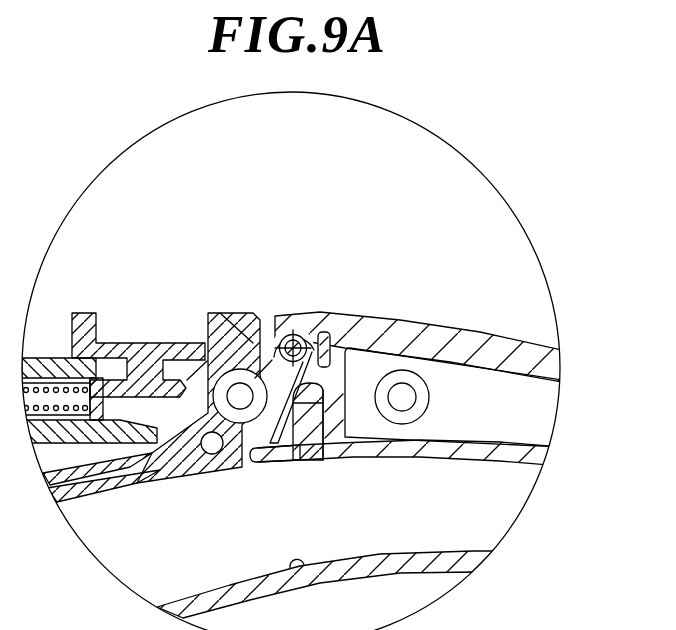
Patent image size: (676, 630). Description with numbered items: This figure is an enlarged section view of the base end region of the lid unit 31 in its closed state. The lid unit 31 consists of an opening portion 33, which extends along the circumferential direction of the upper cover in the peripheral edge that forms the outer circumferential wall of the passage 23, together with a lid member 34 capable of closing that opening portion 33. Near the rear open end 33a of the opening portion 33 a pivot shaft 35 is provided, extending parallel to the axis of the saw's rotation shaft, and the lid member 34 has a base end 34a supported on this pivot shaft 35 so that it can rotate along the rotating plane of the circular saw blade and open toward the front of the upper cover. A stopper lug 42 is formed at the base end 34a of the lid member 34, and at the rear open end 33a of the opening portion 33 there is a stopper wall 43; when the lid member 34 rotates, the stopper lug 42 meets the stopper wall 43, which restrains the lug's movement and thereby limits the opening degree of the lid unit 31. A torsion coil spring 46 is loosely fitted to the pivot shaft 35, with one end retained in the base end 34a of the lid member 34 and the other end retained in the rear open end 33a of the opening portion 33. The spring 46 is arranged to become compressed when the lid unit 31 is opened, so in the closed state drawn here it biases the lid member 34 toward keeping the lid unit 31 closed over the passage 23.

The lid unit 31 is at (322, 240).
The stopper lug 42 is at (226, 326).
The torsion coil spring 46 is at (270, 326).
The pivot shaft 35 is at (291, 330).
The base end 34a is at (334, 330).
The lid member 34 is at (440, 325).
The stopper wall 43 is at (322, 404).
The opening portion 33 is at (335, 445).
The rear open end 33a is at (288, 462).
The passage 23 is at (298, 565).